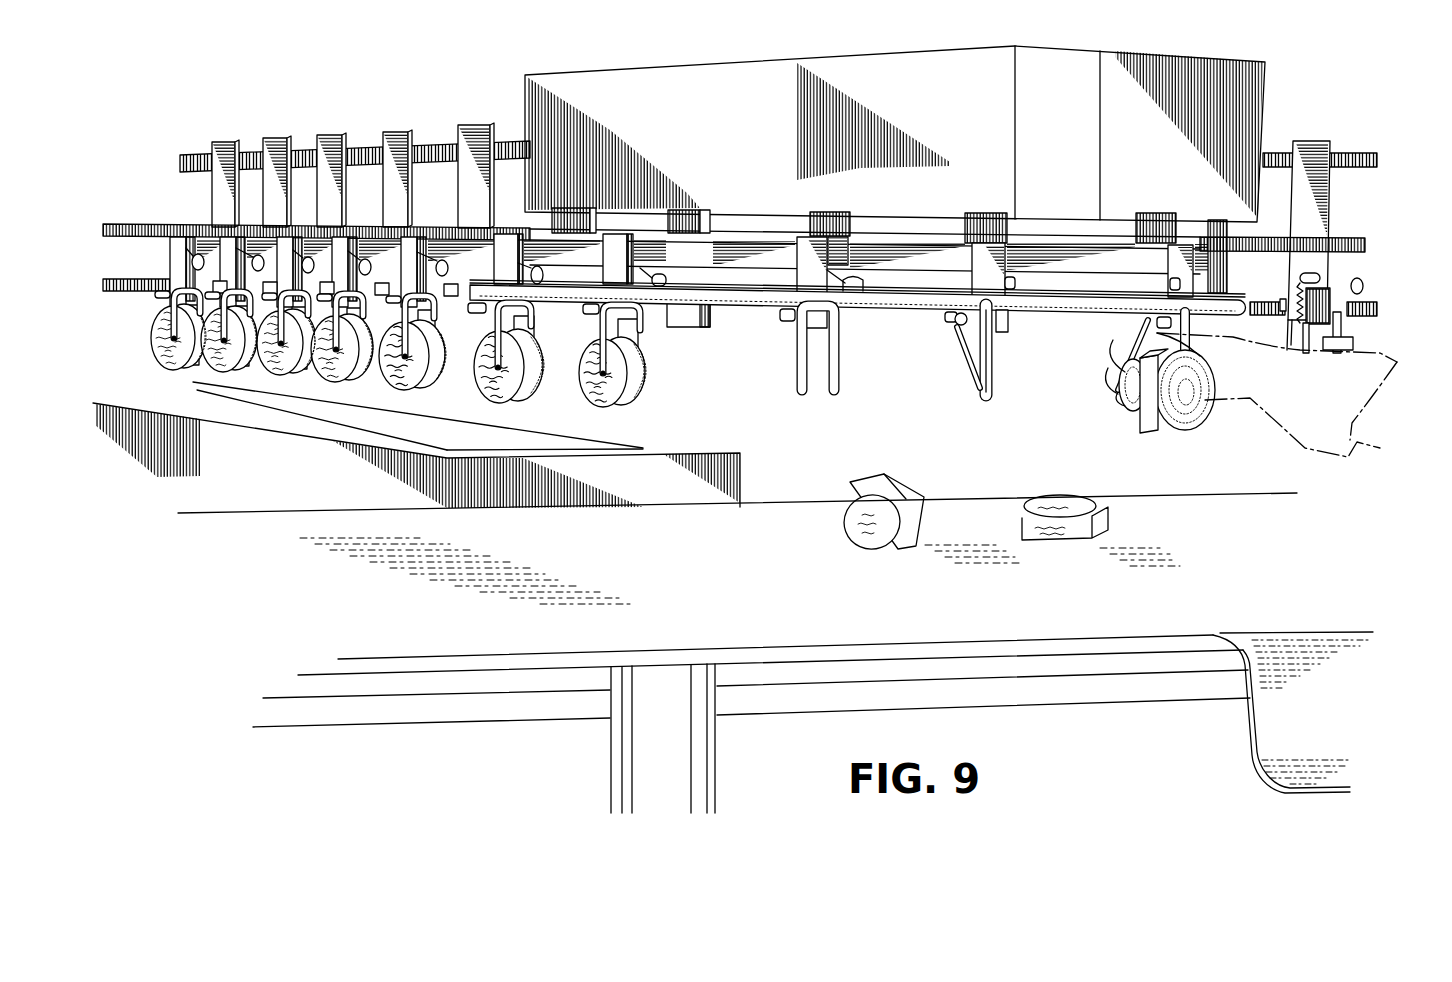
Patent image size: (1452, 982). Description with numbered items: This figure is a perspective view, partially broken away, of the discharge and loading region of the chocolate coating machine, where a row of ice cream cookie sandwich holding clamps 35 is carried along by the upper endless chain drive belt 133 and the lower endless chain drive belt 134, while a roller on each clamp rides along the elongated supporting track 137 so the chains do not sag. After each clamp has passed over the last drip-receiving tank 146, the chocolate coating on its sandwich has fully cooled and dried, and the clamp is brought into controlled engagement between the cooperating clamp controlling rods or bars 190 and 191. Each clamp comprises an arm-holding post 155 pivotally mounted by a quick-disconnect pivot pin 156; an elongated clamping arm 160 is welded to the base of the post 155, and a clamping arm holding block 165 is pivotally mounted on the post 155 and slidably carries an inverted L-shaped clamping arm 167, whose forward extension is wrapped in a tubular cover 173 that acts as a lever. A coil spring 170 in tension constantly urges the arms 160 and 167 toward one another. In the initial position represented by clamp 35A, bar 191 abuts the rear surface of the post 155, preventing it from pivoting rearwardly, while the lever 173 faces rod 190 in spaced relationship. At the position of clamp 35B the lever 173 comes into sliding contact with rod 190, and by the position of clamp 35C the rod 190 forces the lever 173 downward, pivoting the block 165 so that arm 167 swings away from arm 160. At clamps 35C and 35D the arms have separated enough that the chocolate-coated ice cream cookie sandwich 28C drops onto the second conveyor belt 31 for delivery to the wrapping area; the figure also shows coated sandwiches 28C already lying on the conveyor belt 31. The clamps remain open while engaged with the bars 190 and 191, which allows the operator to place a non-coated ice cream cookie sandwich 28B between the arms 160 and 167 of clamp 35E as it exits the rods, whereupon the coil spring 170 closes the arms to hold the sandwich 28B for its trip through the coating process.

The second conveyor belt 31 is at (731, 589).
The non-coated ice cream cookie sandwich 28B is at (1180, 428).
The chocolate-coated ice cream cookie sandwich 28C is at (391, 374).
The ice cream cookie sandwich holding clamp 35 is at (215, 208).
The holding clamp in initial position 35A is at (580, 220).
The holding clamp in second position 35B is at (698, 220).
The holding clamp in third position 35C is at (856, 231).
The holding clamp in fourth position 35D is at (1003, 234).
The holding clamp in exit position 35E is at (1170, 234).
The upper endless chain drive belt 133 is at (373, 150).
The lower endless chain drive belt 134 is at (132, 292).
The supporting track 137 is at (128, 225).
The drip-receiving tank 146 is at (273, 482).
The arm-holding post 155 is at (413, 243).
The pivot pin 156 is at (539, 268).
The clamping arm 160 is at (497, 373).
The clamping arm holding block 165 is at (970, 340).
The inverted L-shaped clamping arm 167 is at (525, 317).
The coil spring 170 is at (1298, 295).
The tubular cover 173 is at (471, 311).
The clamp controlling rod 190 is at (730, 302).
The clamp controlling bar 191 is at (731, 290).